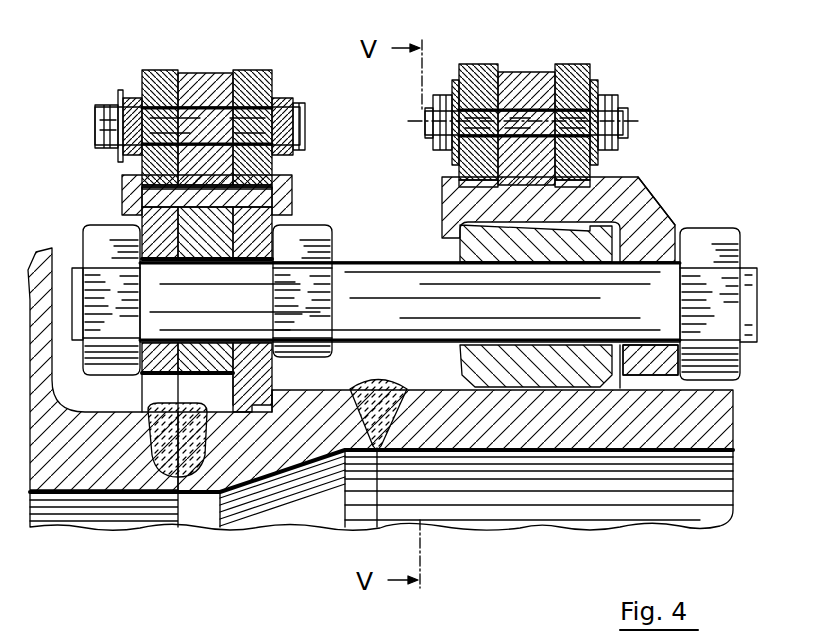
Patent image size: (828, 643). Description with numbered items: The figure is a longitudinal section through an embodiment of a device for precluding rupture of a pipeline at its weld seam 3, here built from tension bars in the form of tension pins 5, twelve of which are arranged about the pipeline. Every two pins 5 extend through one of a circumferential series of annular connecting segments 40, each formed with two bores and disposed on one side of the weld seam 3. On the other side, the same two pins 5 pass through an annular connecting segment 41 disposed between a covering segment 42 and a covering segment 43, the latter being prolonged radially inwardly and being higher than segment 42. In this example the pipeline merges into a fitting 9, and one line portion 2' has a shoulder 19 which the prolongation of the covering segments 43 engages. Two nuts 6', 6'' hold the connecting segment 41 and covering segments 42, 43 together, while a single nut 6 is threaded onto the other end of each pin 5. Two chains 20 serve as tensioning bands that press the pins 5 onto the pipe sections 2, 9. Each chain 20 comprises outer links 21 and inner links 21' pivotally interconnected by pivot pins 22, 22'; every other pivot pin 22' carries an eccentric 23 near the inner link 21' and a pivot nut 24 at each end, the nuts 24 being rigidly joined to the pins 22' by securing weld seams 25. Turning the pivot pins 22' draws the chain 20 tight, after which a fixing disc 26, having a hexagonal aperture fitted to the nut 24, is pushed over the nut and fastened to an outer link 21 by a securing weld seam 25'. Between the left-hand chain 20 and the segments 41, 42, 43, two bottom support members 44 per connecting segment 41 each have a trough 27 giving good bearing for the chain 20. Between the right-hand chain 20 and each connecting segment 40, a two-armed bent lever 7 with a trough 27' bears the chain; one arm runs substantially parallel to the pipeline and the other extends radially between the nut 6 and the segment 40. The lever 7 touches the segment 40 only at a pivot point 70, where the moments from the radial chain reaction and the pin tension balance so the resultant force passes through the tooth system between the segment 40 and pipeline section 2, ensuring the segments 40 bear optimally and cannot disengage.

The pipeline section 2 is at (381, 486).
The line portion 2' is at (174, 537).
The weld seam 3 is at (375, 392).
The tension pin 5 is at (352, 278).
The nut 6 is at (718, 289).
The nut 6' is at (323, 278).
The nut 6'' is at (85, 286).
The two-armed bent lever 7 is at (640, 195).
The fitting 9 is at (82, 475).
The shoulder 19 is at (250, 412).
The chain 20 is at (344, 107).
The outer link 21 is at (368, 107).
The inner link 21' is at (366, 107).
The pivot pin 22 is at (200, 126).
The pivot pin 22' is at (556, 99).
The eccentric 23 is at (524, 125).
The pivot nut 24 is at (618, 140).
The securing weld seam 25 is at (636, 122).
The securing weld seam 25' is at (545, 97).
The fixing disc 26 is at (452, 148).
The trough 27 is at (239, 163).
The trough 27' is at (493, 183).
The annular connecting segment 40 is at (462, 244).
The annular connecting segment 41 is at (262, 203).
The covering segment 42 is at (150, 226).
The covering segment 43 is at (256, 236).
The bottom support member 44 is at (128, 184).
The pivot point 70 is at (655, 212).